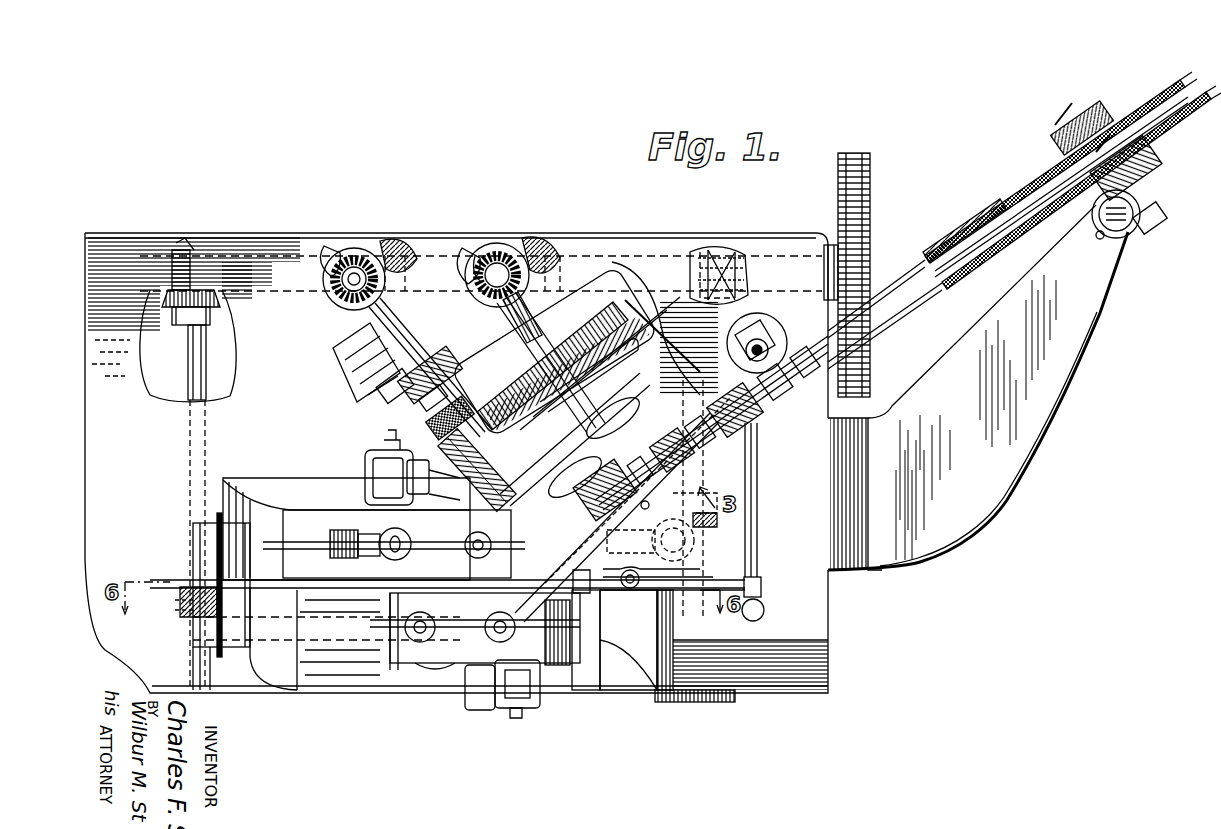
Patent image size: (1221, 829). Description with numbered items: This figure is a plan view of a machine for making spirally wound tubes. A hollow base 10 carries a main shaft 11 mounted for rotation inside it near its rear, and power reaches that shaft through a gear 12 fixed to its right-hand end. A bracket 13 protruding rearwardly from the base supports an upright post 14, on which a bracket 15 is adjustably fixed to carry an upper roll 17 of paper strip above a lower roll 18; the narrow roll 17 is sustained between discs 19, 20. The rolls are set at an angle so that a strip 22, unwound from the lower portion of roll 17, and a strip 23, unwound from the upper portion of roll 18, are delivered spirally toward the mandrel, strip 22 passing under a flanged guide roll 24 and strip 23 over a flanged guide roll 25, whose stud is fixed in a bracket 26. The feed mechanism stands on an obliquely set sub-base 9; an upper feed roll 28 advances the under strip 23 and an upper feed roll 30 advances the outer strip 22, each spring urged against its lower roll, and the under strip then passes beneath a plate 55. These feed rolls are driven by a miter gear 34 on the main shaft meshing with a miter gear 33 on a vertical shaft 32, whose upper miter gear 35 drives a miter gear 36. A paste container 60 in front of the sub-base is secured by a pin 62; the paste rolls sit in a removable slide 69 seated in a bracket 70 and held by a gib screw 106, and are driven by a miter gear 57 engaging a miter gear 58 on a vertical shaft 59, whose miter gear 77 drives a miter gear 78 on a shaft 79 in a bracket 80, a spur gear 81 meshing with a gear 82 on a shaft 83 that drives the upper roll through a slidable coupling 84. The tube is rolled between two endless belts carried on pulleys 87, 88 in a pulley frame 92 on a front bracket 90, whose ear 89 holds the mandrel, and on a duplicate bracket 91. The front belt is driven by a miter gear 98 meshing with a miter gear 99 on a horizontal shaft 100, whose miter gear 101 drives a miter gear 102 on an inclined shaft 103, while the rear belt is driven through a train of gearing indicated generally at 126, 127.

The sub-base 9 is at (614, 262).
The hollow base 10 is at (826, 651).
The main shaft 11 is at (828, 244).
The gear 12 is at (870, 200).
The bracket 13 is at (1040, 418).
The upright post 14 is at (1122, 228).
The bracket 15 is at (1152, 208).
The upper roll of paper strip 17 is at (1044, 180).
The lower roll of paper strip 18 is at (1030, 228).
The disc 19 is at (950, 250).
The disc 20 is at (994, 224).
The strip 22 is at (896, 286).
The strip 23 is at (905, 308).
The flanged guide roll 24 is at (786, 340).
The flanged guide roll 25 is at (785, 404).
The bracket 26 is at (762, 340).
The upper feed roll 28 is at (728, 466).
The upper feed roll 30 is at (628, 569).
The vertical shaft 32 is at (503, 250).
The miter gear 33 is at (474, 252).
The miter gear 34 is at (548, 246).
The miter gear 35 is at (482, 290).
The miter gear 36 is at (512, 312).
The plate 55 is at (620, 520).
The miter gear 57 is at (398, 244).
The miter gear 58 is at (340, 246).
The vertical shaft 59 is at (337, 293).
The container 60 is at (735, 484).
The pin 62 is at (758, 553).
The slide 69 is at (452, 450).
The bracket 70 is at (433, 480).
The miter gear 77 is at (348, 296).
The miter gear 78 is at (366, 318).
The shaft 79 is at (424, 406).
The bracket 80 is at (362, 384).
The spur gear 81 is at (390, 398).
The spur gear 82 is at (440, 360).
The shaft 83 is at (438, 426).
The slidable coupling 84 is at (578, 401).
The pulley 87 is at (432, 668).
The pulley 88 is at (555, 675).
The ear 89 is at (665, 572).
The front bracket 90 is at (645, 692).
The bracket 91 is at (270, 482).
The pulley frame 92 is at (588, 660).
The miter gear 98 is at (184, 250).
The miter gear 99 is at (222, 308).
The horizontal shaft 100 is at (190, 372).
The miter gear 101 is at (180, 604).
The miter gear 102 is at (205, 660).
The upwardly inclined shaft 103 is at (370, 657).
The gib screw 106 is at (468, 470).
The train of gearing 126 is at (712, 250).
The train of gearing 127 is at (679, 527).